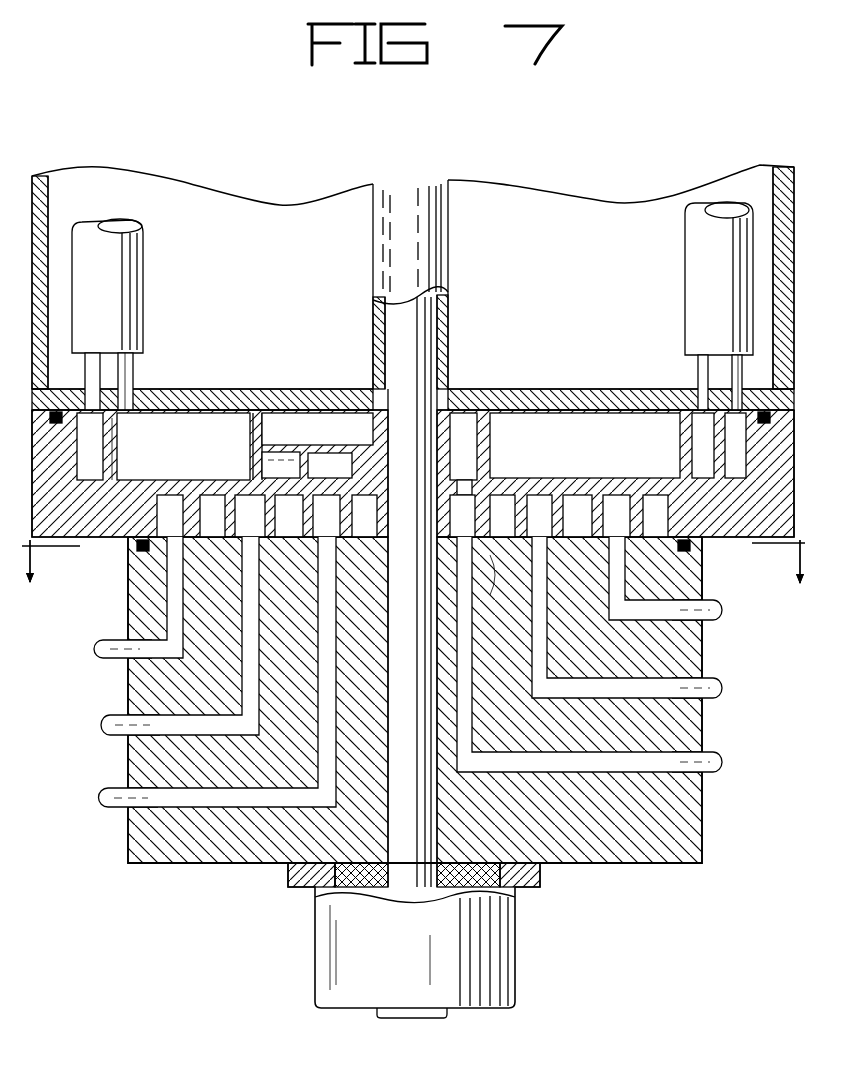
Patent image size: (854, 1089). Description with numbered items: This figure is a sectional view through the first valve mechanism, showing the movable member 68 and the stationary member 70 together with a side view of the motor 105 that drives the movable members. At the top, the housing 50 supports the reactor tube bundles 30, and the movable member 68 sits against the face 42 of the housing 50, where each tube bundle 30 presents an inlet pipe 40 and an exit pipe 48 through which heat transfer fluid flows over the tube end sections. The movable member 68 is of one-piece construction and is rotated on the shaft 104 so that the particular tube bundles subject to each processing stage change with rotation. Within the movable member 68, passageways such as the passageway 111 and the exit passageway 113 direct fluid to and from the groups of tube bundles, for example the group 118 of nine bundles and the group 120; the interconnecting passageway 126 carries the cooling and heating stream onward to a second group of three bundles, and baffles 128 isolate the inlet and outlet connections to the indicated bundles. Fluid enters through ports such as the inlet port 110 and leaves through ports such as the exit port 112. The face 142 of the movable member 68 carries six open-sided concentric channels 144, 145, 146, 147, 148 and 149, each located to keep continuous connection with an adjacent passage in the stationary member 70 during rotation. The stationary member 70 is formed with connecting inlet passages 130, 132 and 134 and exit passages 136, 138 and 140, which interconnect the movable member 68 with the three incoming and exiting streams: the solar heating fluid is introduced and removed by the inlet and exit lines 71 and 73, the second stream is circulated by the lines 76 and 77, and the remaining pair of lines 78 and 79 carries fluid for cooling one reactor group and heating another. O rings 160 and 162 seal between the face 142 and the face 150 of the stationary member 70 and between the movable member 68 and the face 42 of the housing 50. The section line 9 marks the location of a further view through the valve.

The housing 50 is at (140, 168).
The shaft 104 is at (410, 330).
The face 42 is at (560, 400).
The tube bundle 30 is at (110, 283).
The inlet pipe 40 is at (92, 369).
The exit pipe 48 is at (125, 378).
The face of movable member 142 is at (100, 548).
The group of tube bundles 118 is at (92, 470).
The passageway 113 is at (178, 465).
The baffle 128 is at (112, 438).
The exit port 112 is at (257, 485).
The interconnecting passageway 126 is at (330, 455).
The passageway 111 is at (470, 450).
The concentric channel 144 is at (484, 487).
The concentric channel 146 is at (552, 495).
The group of tube bundles 120 is at (735, 423).
The concentric channel 148 is at (613, 500).
The concentric channel 149 is at (165, 512).
The concentric channel 147 is at (245, 538).
The concentric channel 145 is at (315, 543).
The inlet port 110 is at (455, 488).
The O ring 160 is at (56, 424).
The stationary member 70 is at (245, 865).
The inlet passage 132 is at (180, 604).
The inlet passage 130 is at (245, 686).
The inlet passage 134 is at (318, 766).
The exit passage 140 is at (470, 740).
The exit passage 136 is at (545, 657).
The exit passage 138 is at (620, 580).
The face of stationary member 150 is at (496, 579).
The O ring 162 is at (130, 567).
The inlet line 71 is at (103, 640).
The inlet line 76 is at (112, 715).
The inlet line 78 is at (112, 788).
The exit line 73 is at (712, 620).
The exit line 77 is at (712, 698).
The exit line 79 is at (710, 772).
The motor 105 is at (412, 958).
The section line 9 is at (415, 582).
The movable member 68 is at (732, 580).